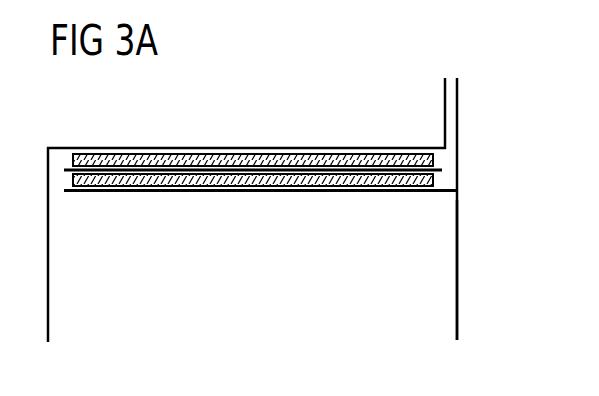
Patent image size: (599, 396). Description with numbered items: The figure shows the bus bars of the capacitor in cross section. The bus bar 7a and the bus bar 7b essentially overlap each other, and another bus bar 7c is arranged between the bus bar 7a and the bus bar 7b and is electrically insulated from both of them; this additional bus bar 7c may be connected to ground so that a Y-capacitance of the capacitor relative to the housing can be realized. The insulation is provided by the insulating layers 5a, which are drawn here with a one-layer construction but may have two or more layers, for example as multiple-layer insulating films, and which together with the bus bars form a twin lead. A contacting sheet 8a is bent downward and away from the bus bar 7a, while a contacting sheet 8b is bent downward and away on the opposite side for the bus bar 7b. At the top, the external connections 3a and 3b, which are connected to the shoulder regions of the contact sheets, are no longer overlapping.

The external connection 3a is at (444, 112).
The external connection 3b is at (459, 112).
The insulation 5a is at (292, 157).
The bus bar 7a is at (128, 146).
The bus bar 7b is at (126, 192).
The bus bar 7c is at (442, 165).
The contacting sheet 8a is at (48, 305).
The contacting sheet 8b is at (457, 302).